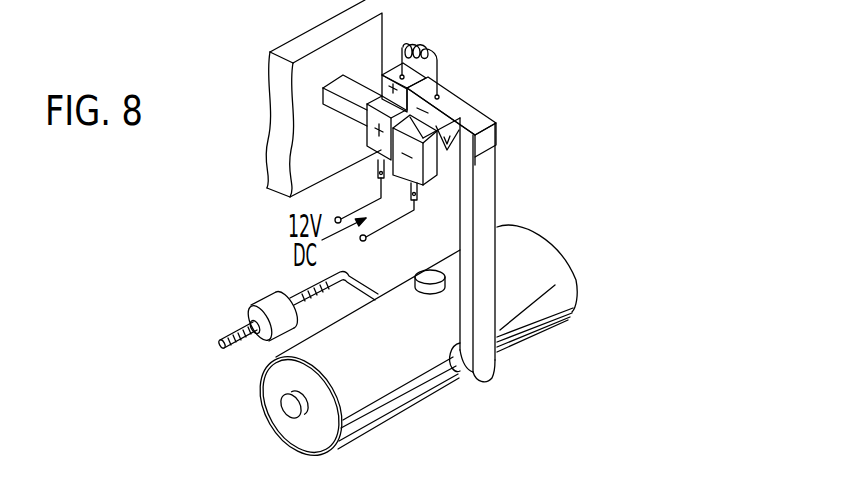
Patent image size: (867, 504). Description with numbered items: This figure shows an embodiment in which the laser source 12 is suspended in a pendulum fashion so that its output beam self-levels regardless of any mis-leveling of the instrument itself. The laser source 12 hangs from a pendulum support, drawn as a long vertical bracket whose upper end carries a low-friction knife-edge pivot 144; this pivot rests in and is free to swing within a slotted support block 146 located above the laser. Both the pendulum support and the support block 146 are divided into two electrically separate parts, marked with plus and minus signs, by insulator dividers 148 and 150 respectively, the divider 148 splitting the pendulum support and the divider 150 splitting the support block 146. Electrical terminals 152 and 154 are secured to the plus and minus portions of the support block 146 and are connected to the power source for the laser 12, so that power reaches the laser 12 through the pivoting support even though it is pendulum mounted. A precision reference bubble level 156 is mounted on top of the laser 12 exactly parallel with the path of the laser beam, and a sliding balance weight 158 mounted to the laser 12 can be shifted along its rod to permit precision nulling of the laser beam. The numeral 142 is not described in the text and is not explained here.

The laser source 12 is at (380, 373).
The mounting bracket 142 is at (489, 186).
The knife-edge pivot 144 is at (447, 144).
The support block 146 is at (437, 167).
The insulator divider 148 is at (424, 90).
The insulator divider 150 is at (372, 141).
The electrical terminal 152 is at (380, 171).
The electrical terminal 154 is at (414, 193).
The reference bubble level 156 is at (420, 273).
The sliding balance weight 158 is at (270, 305).